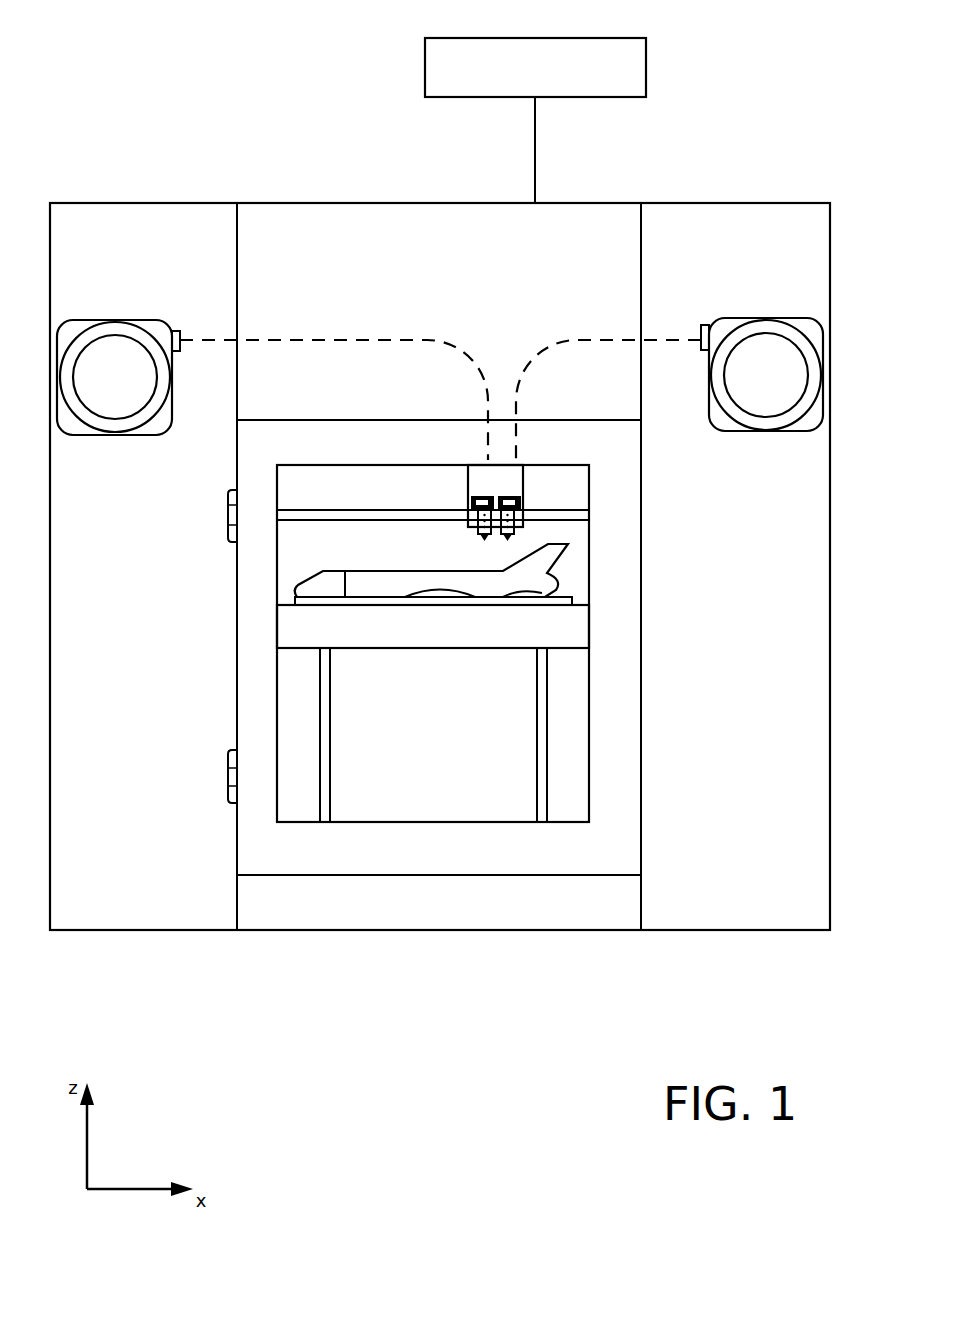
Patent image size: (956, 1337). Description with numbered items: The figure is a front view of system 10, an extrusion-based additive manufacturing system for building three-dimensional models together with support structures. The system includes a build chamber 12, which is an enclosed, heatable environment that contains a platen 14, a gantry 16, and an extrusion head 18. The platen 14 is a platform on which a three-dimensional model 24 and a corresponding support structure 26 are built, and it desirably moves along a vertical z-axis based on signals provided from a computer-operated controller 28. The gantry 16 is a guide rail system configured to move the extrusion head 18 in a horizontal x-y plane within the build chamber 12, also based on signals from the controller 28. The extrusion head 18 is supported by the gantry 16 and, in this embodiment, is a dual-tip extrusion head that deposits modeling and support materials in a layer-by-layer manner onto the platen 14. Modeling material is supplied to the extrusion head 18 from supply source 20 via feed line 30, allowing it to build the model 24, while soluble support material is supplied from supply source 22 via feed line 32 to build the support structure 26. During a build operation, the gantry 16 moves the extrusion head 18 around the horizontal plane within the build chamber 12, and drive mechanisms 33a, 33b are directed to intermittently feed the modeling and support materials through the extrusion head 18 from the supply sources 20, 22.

The system 10 is at (265, 162).
The build chamber 12 is at (400, 832).
The platen 14 is at (580, 640).
The gantry 16 is at (345, 512).
The extrusion head 18 is at (560, 490).
The supply source 20 is at (733, 318).
The supply source 22 is at (83, 320).
The 3D model 24 is at (322, 580).
The support structure 26 is at (563, 593).
The controller 28 is at (646, 51).
The feed line 30 is at (577, 340).
The feed line 32 is at (302, 340).
The drive mechanism 33a is at (472, 507).
The drive mechanism 33b is at (522, 507).